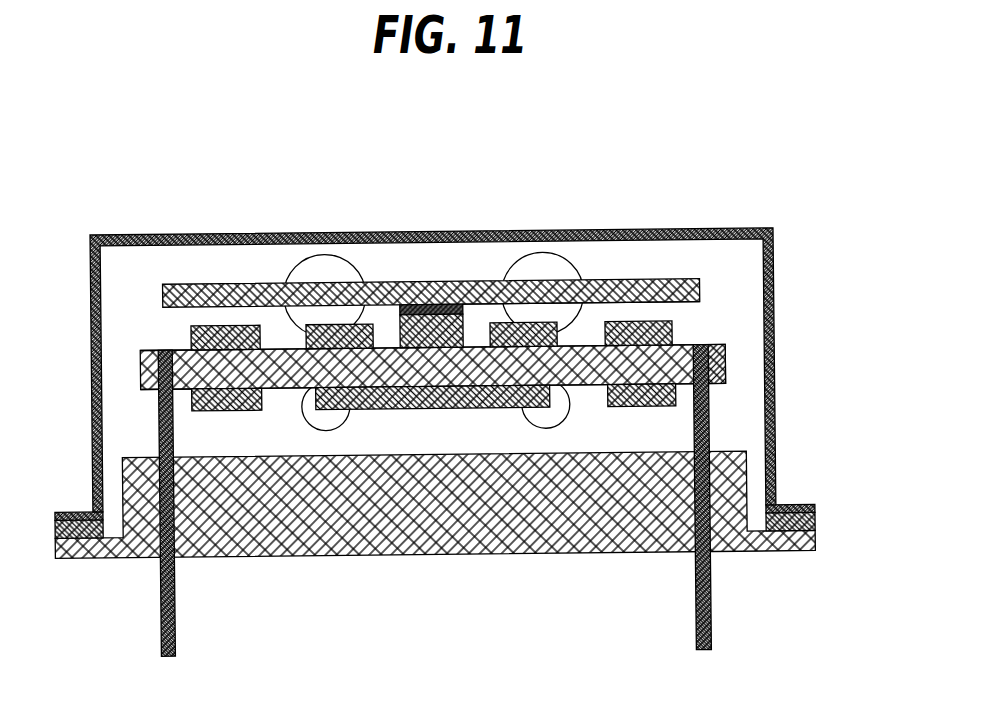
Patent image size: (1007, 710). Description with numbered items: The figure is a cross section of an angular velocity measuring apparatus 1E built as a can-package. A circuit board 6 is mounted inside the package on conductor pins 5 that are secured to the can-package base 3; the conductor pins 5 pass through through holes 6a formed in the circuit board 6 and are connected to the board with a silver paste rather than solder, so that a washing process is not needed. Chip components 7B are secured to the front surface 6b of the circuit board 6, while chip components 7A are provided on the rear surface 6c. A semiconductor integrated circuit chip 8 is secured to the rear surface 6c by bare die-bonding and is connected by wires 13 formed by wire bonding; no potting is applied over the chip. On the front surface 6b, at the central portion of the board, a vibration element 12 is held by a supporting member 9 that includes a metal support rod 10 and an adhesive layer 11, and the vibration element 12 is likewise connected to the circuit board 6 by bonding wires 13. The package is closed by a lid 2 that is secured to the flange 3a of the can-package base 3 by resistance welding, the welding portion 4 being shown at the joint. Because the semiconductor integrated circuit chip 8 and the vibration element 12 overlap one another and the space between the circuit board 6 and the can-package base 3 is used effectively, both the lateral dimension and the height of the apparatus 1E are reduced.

The angular velocity measuring apparatus 1E is at (462, 405).
The lid 2 is at (693, 229).
The can-package base 3 is at (520, 551).
The flange 3a is at (803, 541).
The welding portion 4 is at (814, 507).
The conductor pins 5 is at (160, 606).
The circuit board 6 is at (726, 370).
The through holes 6a is at (724, 347).
The front surface 6b is at (280, 345).
The rear surface 6c is at (280, 390).
The chip components 7A is at (229, 412).
The chip components 7B is at (222, 326).
The semiconductor integrated circuit chip 8 is at (455, 413).
The supporting member 9 is at (451, 302).
The metal support rod 10 is at (480, 307).
The adhesive layer 11 is at (404, 316).
The vibration element 12 is at (431, 280).
The wires 13 is at (326, 255).